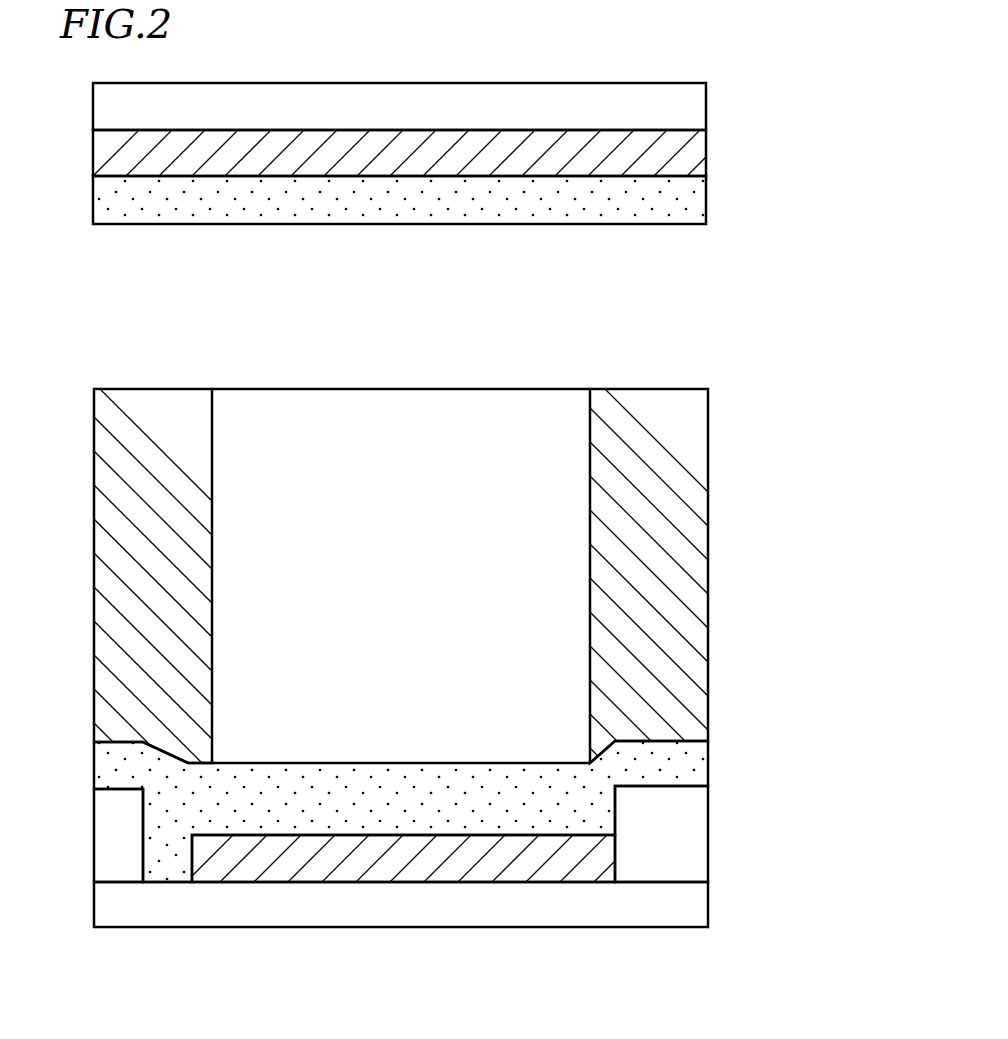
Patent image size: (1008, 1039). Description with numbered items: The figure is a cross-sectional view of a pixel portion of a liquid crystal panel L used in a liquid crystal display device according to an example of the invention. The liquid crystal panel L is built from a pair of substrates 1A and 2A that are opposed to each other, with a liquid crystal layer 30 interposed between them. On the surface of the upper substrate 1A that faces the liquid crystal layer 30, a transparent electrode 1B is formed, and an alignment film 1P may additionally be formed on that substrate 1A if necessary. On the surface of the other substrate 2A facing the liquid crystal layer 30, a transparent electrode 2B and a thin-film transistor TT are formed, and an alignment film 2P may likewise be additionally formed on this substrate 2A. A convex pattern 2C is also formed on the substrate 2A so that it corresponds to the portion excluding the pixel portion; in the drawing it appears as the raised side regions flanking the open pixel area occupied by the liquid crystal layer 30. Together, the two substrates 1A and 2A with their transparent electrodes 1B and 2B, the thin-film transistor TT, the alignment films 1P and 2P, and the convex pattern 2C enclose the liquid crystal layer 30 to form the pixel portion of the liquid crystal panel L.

The substrate 1A is at (706, 103).
The transparent electrode 1B is at (706, 156).
The alignment film 1P is at (706, 200).
The convex pattern 2C is at (622, 388).
The liquid crystal layer 30 is at (722, 228).
The liquid crystal panel L is at (846, 925).
The alignment film 2P is at (709, 770).
The thin-film transistor TT is at (709, 838).
The substrate 2A is at (709, 898).
The transparent electrode 2B is at (577, 873).